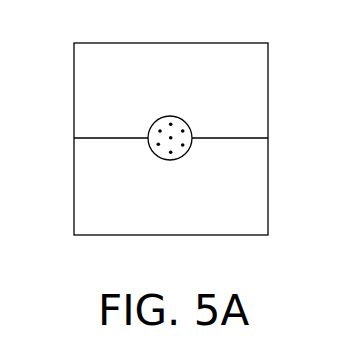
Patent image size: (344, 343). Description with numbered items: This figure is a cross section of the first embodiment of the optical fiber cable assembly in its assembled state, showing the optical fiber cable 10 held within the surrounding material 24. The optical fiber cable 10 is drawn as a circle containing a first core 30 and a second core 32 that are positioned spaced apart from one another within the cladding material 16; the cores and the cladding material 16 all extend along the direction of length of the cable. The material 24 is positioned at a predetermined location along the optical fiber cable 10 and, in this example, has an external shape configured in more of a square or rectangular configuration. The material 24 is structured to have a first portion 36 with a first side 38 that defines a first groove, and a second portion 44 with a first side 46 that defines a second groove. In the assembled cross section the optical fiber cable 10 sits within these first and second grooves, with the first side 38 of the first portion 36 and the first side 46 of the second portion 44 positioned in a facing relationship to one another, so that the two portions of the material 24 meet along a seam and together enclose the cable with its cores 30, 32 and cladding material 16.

The optical fiber cable 10 is at (152, 117).
The cladding material 16 is at (148, 142).
The material 24 is at (60, 118).
The first core 30 is at (170, 140).
The second core 32 is at (171, 124).
The first portion 36 is at (232, 80).
The first side 38 is at (242, 137).
The second portion 44 is at (249, 194).
The first side 46 is at (230, 138).